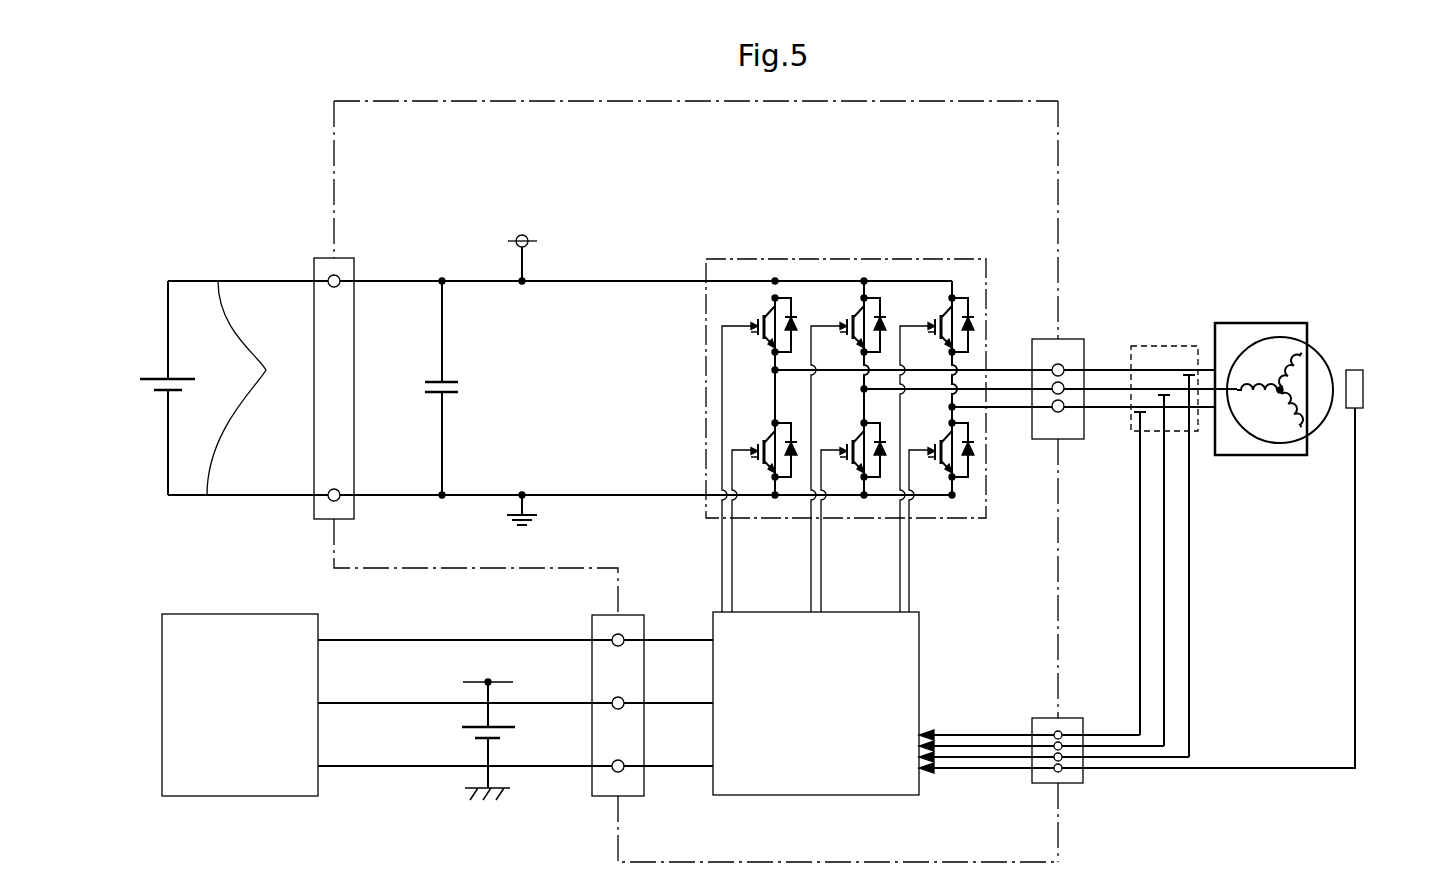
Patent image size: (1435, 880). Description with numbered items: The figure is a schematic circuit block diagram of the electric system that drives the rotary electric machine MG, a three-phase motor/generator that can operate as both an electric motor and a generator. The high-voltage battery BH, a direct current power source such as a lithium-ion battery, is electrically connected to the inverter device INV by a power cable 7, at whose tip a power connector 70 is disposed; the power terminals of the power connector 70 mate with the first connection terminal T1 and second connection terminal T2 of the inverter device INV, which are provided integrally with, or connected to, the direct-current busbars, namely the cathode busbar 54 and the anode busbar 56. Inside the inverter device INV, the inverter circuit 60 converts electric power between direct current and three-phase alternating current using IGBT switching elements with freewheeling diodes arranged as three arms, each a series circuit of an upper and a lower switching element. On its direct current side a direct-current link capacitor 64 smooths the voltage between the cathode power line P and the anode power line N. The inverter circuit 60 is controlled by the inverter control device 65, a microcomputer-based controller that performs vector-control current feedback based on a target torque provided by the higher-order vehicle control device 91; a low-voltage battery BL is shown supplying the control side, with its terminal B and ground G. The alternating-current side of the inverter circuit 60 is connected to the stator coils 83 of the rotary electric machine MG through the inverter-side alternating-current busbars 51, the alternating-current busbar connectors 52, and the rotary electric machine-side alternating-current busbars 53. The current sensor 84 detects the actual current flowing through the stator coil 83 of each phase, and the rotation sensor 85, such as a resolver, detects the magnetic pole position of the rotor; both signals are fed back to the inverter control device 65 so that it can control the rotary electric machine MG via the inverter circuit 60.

The power cable 7 is at (170, 388).
The power connector 70 is at (346, 358).
The direct-current link capacitor 64 is at (449, 381).
The cathode busbar 54 is at (593, 281).
The anode busbar 56 is at (594, 495).
The inverter circuit 60 is at (814, 259).
The inverter control device 65 is at (800, 795).
The inverter-side alternating-current busbar 51 is at (1018, 408).
The alternating-current busbar connector 52 is at (1074, 440).
The rotary electric machine-side alternating-current busbar 53 is at (1118, 408).
The current sensor 84 is at (1164, 346).
The rotation sensor 85 is at (1363, 388).
The stator coil 83 is at (1306, 401).
The vehicle control device 91 is at (239, 614).
The inverter device INV is at (1058, 168).
The rotary electric machine MG is at (1307, 389).
The high-voltage battery BH is at (130, 376).
The low-voltage battery BL is at (433, 744).
The first connection terminal T1 is at (337, 276).
The second connection terminal T2 is at (337, 491).
The cathode power line P is at (522, 245).
The anode power line N is at (522, 524).
The battery terminal B is at (488, 670).
The ground G is at (487, 810).